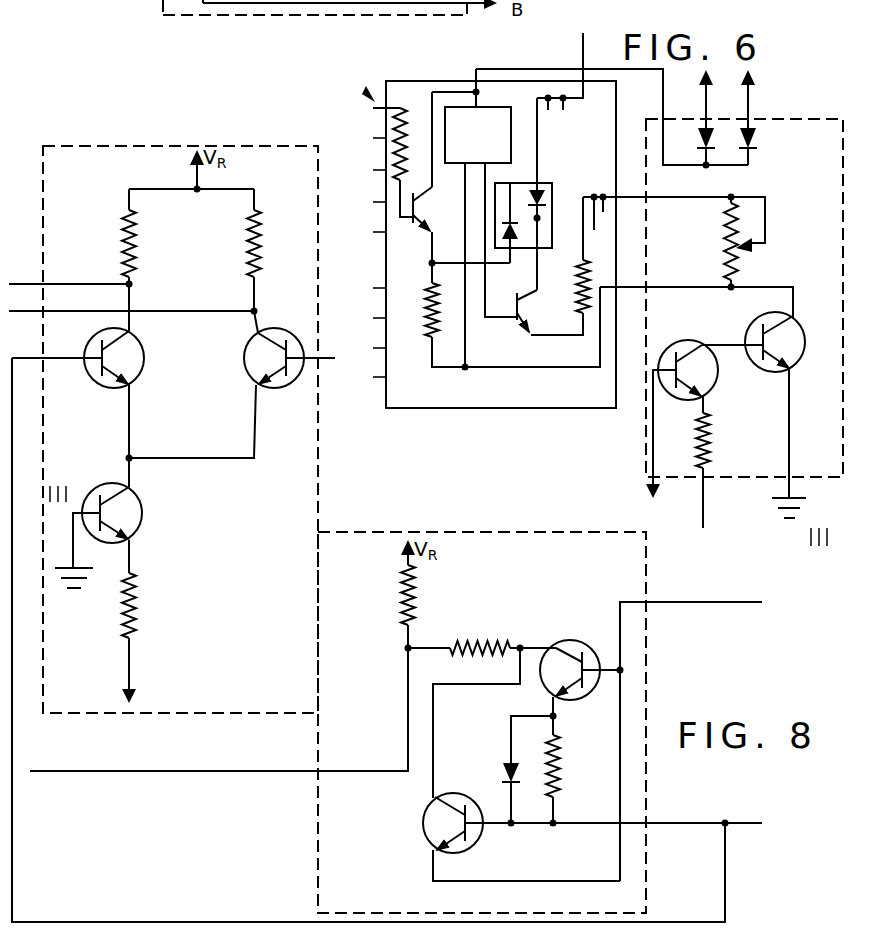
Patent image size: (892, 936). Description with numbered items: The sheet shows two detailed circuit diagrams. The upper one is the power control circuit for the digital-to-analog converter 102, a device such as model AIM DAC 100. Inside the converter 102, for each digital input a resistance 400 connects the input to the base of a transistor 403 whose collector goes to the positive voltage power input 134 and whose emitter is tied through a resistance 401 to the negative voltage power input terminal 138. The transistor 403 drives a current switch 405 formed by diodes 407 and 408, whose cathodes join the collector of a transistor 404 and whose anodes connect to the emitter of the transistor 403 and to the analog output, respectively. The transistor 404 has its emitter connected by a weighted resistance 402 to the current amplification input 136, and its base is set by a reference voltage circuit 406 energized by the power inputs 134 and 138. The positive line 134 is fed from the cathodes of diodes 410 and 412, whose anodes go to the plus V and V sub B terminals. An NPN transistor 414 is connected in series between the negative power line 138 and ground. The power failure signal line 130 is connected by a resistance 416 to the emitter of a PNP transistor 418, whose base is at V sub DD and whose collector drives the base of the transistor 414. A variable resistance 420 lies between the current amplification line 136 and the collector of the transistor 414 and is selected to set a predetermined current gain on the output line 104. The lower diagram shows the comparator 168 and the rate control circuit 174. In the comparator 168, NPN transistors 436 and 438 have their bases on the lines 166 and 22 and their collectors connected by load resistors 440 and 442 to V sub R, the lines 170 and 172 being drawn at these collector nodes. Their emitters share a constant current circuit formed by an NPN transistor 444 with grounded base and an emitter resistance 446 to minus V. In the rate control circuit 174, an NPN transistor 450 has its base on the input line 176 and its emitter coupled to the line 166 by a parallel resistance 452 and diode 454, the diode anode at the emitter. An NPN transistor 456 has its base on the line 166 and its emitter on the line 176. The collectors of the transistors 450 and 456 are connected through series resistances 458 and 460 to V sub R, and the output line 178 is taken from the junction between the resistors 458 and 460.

In FIG. 6, the integrated circuit regulator connection 100 is at (372, 98).
In FIG. 6, the digital-to-analog converter 102 is at (388, 80).
In FIG. 6, the output line 104 is at (583, 40).
In FIG. 6, the power failure signal line 130 is at (704, 498).
In FIG. 6, the positive voltage power input 134 is at (528, 69).
In FIG. 6, the current amplification input 136 is at (641, 197).
In FIG. 6, the negative voltage power input terminal 138 is at (631, 287).
In FIG. 6, the resistance 400 is at (395, 128).
In FIG. 6, the resistance 401 is at (428, 335).
In FIG. 6, the resistance 402 is at (579, 286).
In FIG. 6, the transistor 403 is at (406, 228).
In FIG. 6, the transistor 404 is at (520, 336).
In FIG. 6, the current switch 405 is at (519, 183).
In FIG. 6, the reference voltage circuit 406 is at (461, 107).
In FIG. 6, the diode 407 is at (514, 245).
In FIG. 6, the diode 408 is at (546, 205).
In FIG. 6, the diode 410 is at (698, 143).
In FIG. 6, the diode 412 is at (754, 140).
In FIG. 6, the NPN transistor 414 is at (750, 322).
In FIG. 6, the resistance 416 is at (715, 432).
In FIG. 6, the PNP transistor 418 is at (712, 368).
In FIG. 6, the variable resistance 420 is at (739, 264).
In FIG. 8, the comparator 168 is at (91, 146).
In FIG. 8, the input line 170 is at (61, 264).
In FIG. 8, the input line 172 is at (92, 308).
In FIG. 8, the line 22 is at (330, 366).
In FIG. 8, the NPN transistor 436 is at (137, 345).
In FIG. 8, the NPN transistor 438 is at (248, 369).
In FIG. 8, the load resistor 440 is at (125, 222).
In FIG. 8, the load resistor 442 is at (259, 234).
In FIG. 8, the NPN transistor 444 is at (140, 507).
In FIG. 8, the resistance 446 is at (140, 603).
In FIG. 8, the rate control circuit 174 is at (332, 531).
In FIG. 8, the input line 176 is at (669, 602).
In FIG. 8, the output line 178 is at (188, 752).
In FIG. 8, the NPN transistor 450 is at (574, 640).
In FIG. 8, the resistance 452 is at (562, 778).
In FIG. 8, the diode 454 is at (506, 772).
In FIG. 8, the NPN transistor 456 is at (425, 827).
In FIG. 8, the resistance 458 is at (462, 645).
In FIG. 8, the resistance 460 is at (420, 592).
In FIG. 8, the line 166 is at (656, 828).